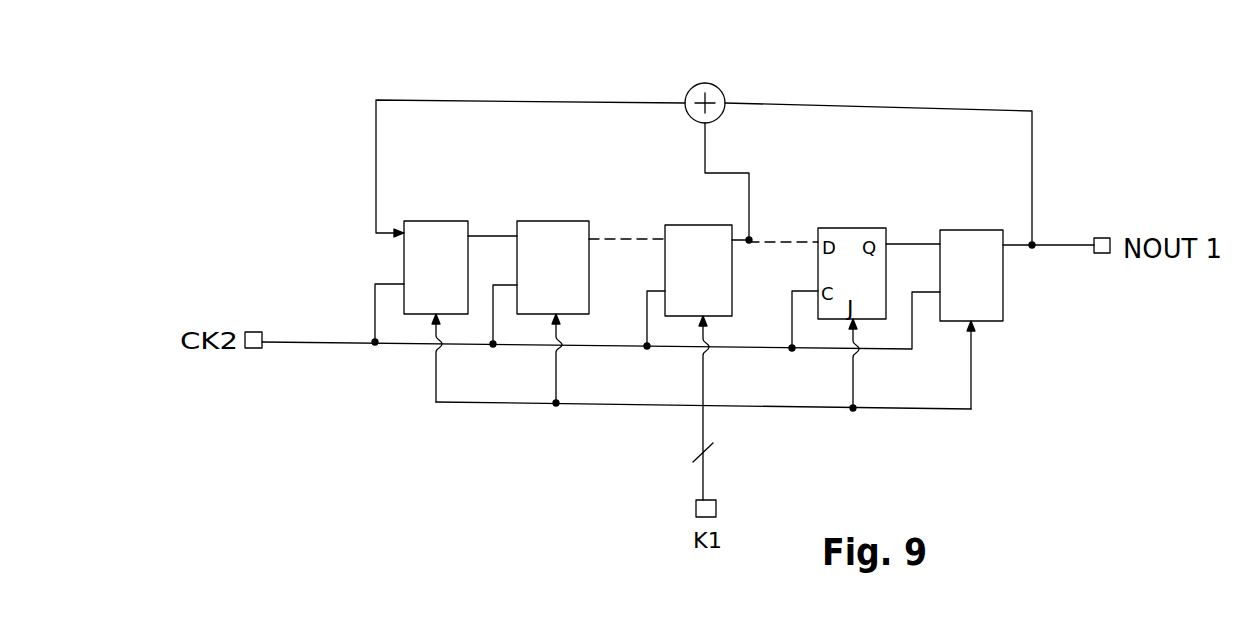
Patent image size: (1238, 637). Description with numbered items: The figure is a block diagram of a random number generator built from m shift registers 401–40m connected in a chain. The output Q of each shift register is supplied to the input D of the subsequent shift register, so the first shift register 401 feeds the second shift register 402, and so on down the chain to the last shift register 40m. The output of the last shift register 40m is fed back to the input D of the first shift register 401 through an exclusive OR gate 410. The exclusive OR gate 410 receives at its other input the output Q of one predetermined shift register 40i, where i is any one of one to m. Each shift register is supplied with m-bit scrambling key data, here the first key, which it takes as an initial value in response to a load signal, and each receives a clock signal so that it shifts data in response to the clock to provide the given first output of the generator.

The shift register 401 is at (446, 221).
The shift register 402 is at (583, 221).
The predetermined shift register 40i is at (690, 225).
The shift register 40m is at (983, 230).
The exclusive OR gate 410 is at (720, 88).